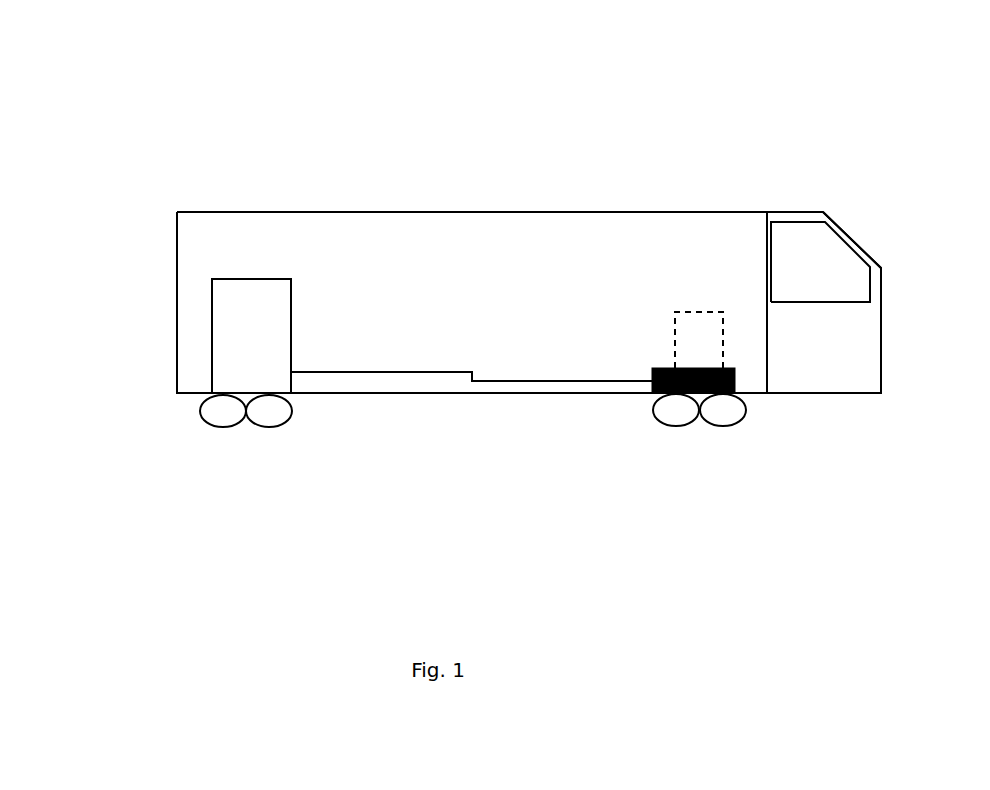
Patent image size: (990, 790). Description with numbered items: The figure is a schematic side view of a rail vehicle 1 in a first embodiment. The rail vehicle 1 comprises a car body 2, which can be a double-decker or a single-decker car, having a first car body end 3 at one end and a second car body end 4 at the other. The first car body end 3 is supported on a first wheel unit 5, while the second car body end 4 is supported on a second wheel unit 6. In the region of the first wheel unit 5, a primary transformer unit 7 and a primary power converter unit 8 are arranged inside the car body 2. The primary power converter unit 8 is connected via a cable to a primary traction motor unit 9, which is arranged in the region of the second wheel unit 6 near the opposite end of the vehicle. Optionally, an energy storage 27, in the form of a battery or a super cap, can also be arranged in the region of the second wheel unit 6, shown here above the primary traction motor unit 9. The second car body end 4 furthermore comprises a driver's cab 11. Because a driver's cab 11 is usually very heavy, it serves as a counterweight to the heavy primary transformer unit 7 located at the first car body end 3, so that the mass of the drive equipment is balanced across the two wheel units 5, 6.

The rail vehicle 1 is at (211, 157).
The car body 2 is at (502, 212).
The first car body end 3 is at (176, 302).
The second car body end 4 is at (882, 303).
The first wheel unit 5 is at (200, 408).
The second wheel unit 6 is at (740, 423).
The primary transformer unit 7 is at (250, 279).
The primary power converter unit 8 is at (291, 279).
The primary traction motor unit 9 is at (653, 393).
The driver's cab 11 is at (820, 278).
The energy storage 27 is at (700, 312).